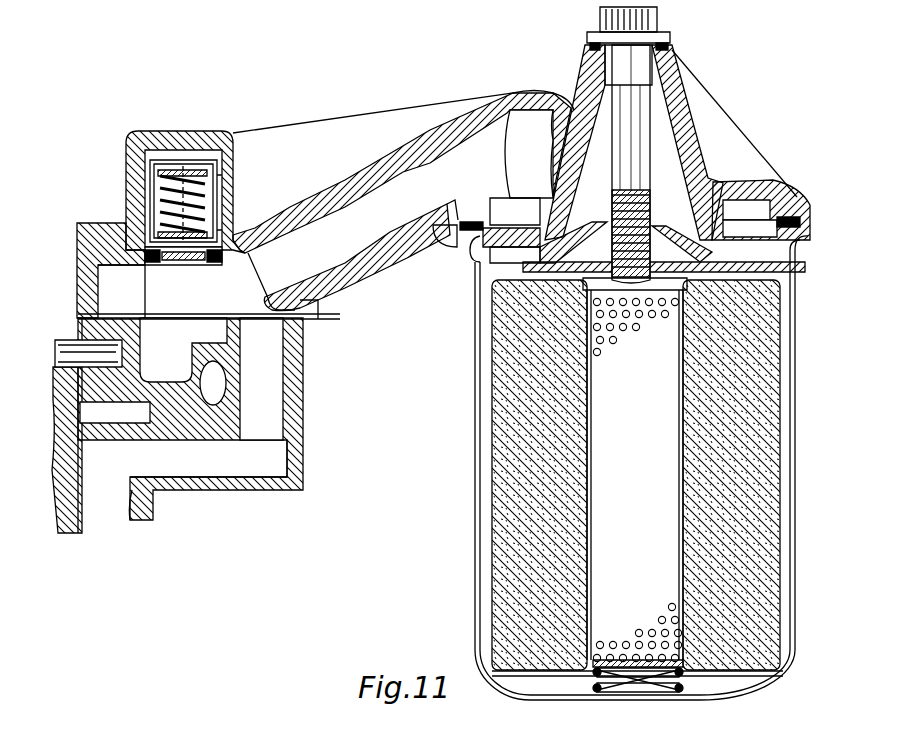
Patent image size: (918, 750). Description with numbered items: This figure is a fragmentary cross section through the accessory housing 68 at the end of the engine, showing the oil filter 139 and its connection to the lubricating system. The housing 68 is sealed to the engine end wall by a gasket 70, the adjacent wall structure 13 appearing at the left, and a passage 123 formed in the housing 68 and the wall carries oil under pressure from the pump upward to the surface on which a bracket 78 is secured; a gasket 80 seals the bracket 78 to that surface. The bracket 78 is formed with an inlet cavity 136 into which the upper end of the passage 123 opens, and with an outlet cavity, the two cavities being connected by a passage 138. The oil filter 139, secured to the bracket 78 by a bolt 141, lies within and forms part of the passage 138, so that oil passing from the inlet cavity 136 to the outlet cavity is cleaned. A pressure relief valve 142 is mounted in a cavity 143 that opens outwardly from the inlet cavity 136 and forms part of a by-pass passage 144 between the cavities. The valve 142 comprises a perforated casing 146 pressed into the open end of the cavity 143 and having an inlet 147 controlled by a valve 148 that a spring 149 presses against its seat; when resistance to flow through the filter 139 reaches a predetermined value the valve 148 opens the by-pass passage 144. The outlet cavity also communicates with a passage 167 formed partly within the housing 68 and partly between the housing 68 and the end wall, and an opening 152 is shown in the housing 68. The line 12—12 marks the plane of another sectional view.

The section line 12- 12 is at (80, 318).
The mounting panel 13 is at (65, 535).
The housing 68 is at (300, 405).
The gasket 70 is at (80, 533).
The bracket 78 is at (362, 281).
The gasket 80 is at (322, 318).
The passage 123 is at (132, 521).
The inlet cavity 136 is at (100, 310).
The passage 138 is at (480, 515).
The oil filter 139 is at (476, 400).
The bolt 141 is at (645, 148).
The pressure relief valve 142 is at (150, 210).
The cavity 143 is at (215, 162).
The by-pass passage 144 is at (218, 186).
The perforated casing 146 is at (150, 264).
The inlet 147 is at (210, 265).
The valve 148 is at (182, 262).
The spring 149 is at (183, 168).
The hole 152 is at (226, 380).
The passage 167 is at (128, 386).